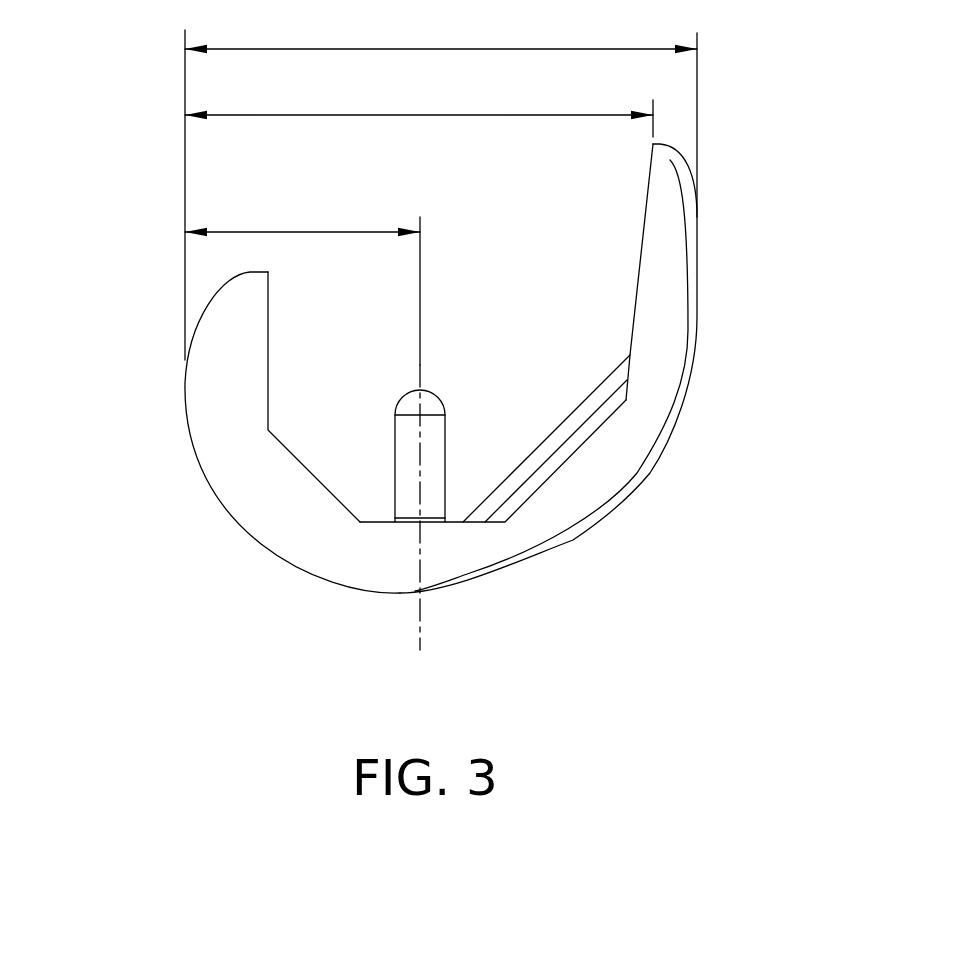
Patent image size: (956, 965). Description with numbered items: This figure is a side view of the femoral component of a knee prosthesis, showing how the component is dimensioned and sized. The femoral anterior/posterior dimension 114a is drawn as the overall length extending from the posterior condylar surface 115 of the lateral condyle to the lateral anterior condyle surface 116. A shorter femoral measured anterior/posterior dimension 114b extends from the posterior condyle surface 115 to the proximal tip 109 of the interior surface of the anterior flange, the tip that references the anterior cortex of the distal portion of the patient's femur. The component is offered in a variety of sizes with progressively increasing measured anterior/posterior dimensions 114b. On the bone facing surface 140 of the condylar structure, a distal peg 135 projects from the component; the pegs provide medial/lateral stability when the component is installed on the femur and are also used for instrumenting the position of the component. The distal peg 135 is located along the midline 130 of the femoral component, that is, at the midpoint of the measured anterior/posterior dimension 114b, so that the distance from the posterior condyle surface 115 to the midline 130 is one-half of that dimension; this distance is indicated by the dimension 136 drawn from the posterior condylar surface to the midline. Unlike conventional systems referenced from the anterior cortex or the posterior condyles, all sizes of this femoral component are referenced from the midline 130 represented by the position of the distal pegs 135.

The femoral anterior/posterior dimension 114a is at (328, 48).
The femoral measured anterior/posterior dimension 114b is at (403, 114).
The distance from lateral edge to centerline 136 is at (268, 231).
The proximal tip 109 is at (647, 152).
The lateral anterior condyle surface 116 is at (707, 302).
The posterior condylar surface 115 is at (185, 392).
The bone facing surface 140 is at (373, 518).
The distal peg 135 is at (437, 437).
The midline 130 is at (420, 622).